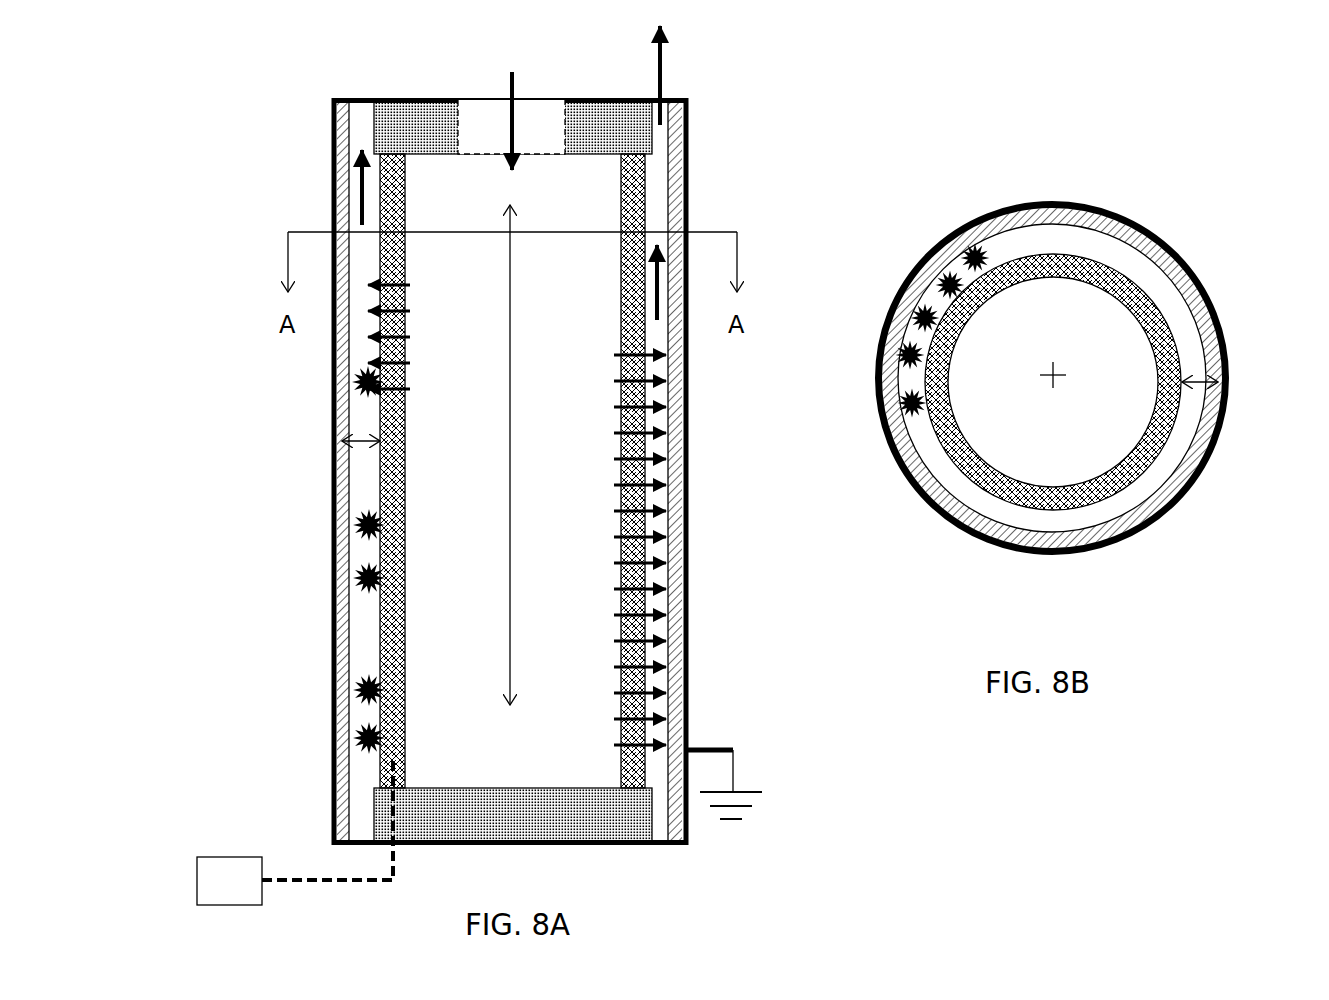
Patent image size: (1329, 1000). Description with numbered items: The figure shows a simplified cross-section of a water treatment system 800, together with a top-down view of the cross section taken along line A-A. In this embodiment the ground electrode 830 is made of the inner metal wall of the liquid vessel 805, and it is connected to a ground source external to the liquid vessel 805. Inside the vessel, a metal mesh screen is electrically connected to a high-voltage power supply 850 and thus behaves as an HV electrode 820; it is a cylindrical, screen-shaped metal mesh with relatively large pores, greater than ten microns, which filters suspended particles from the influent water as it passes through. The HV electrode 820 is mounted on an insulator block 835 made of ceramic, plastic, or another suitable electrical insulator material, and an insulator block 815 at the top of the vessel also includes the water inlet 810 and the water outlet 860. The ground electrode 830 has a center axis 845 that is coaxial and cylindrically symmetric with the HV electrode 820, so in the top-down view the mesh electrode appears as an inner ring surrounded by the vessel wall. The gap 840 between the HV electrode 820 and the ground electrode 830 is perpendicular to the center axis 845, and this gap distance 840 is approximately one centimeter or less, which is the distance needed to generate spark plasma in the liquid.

In FIG. 8A, the water treatment system 800 is at (262, 49).
In FIG. 8B, the water treatment system 800 is at (965, 116).
In FIG. 8A, the liquid vessel 805 is at (334, 420).
In FIG. 8B, the liquid vessel 805 is at (880, 343).
In FIG. 8A, the water inlet 810 is at (510, 97).
In FIG. 8A, the insulator block 815 is at (420, 97).
In FIG. 8A, the HV electrode 820 is at (382, 503).
In FIG. 8B, the HV electrode 820 is at (977, 490).
In FIG. 8A, the ground electrode 830 is at (350, 647).
In FIG. 8B, the ground electrode 830 is at (1000, 542).
In FIG. 8A, the insulator block 835 is at (652, 820).
In FIG. 8A, the gap 840 is at (337, 453).
In FIG. 8B, the gap 840 is at (1227, 392).
In FIG. 8A, the center axis 845 is at (510, 430).
In FIG. 8B, the center axis 845 is at (1053, 376).
In FIG. 8A, the high-voltage power supply 850 is at (230, 856).
In FIG. 8A, the water outlet 860 is at (664, 97).